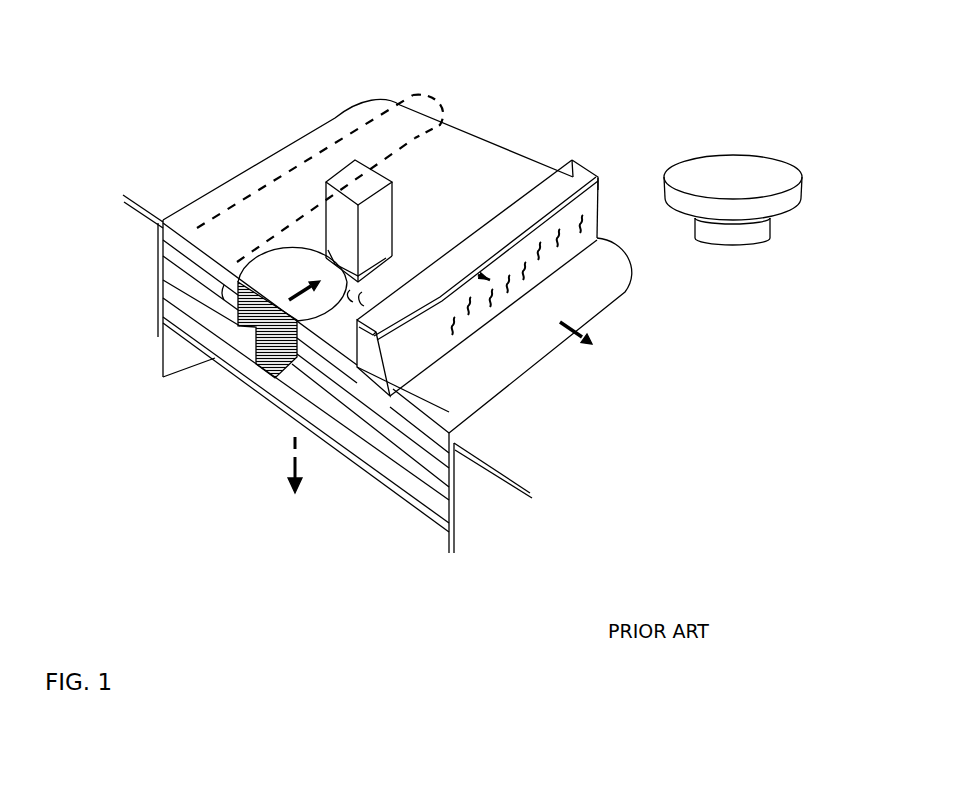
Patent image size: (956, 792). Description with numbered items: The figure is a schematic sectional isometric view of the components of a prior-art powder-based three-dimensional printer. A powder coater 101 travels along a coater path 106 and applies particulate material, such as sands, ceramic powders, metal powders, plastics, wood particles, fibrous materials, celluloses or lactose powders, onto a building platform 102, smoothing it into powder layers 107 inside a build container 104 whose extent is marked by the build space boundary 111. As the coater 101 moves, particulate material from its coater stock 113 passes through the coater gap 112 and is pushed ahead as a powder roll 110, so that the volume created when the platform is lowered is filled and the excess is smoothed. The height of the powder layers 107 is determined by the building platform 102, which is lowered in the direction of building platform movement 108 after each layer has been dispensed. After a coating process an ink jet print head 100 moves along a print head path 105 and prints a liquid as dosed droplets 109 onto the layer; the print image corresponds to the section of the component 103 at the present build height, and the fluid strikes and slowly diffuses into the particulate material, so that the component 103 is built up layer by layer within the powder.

The print head 100 is at (378, 238).
The coater 101 is at (520, 222).
The building platform 102 is at (219, 361).
The component 103 is at (273, 272).
The build container 104 is at (162, 288).
The print head path 105 is at (336, 140).
The coater path 106 is at (542, 313).
The powder layers 107 is at (434, 470).
The direction of building platform movement 108 is at (293, 461).
The dosed droplets 109 is at (270, 372).
The powder roll 110 is at (570, 225).
The build space boundary 111 is at (275, 148).
The coater gap 112 is at (451, 436).
The coater stock 113 is at (365, 358).